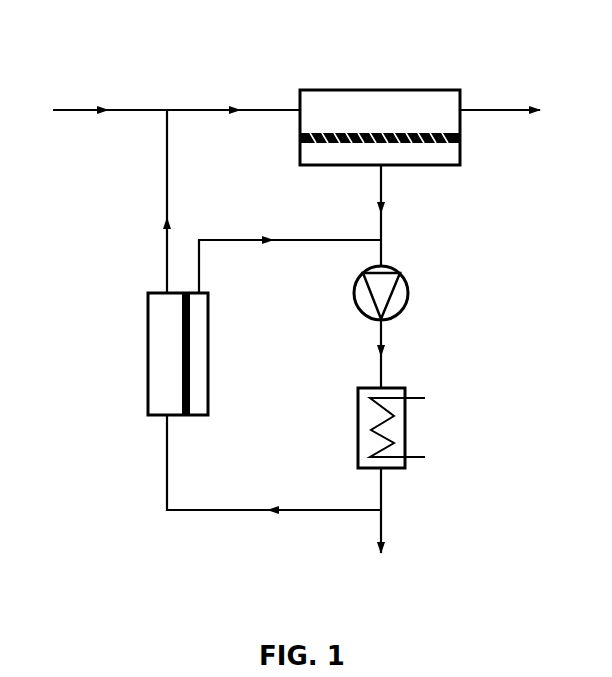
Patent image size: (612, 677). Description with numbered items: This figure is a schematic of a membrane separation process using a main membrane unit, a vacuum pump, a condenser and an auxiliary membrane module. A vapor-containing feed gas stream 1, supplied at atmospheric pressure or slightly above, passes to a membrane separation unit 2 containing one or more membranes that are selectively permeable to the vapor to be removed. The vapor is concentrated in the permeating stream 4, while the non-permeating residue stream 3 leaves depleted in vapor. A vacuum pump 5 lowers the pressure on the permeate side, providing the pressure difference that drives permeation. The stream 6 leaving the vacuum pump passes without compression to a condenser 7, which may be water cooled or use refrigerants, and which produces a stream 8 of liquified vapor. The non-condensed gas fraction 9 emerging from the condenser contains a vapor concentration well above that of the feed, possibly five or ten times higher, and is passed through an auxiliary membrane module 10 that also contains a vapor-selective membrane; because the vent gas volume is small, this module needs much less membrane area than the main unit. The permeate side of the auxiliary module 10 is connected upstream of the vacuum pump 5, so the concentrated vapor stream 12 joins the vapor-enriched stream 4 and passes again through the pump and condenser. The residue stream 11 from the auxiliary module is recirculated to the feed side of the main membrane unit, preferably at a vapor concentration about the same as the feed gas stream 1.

The feed gas stream 1 is at (176, 94).
The membrane separation unit 2 is at (370, 90).
The residue stream 3 is at (512, 112).
The permeate stream 4 is at (396, 215).
The vacuum pump 5 is at (408, 278).
The vacuum pump exhaust stream 6 is at (363, 354).
The condenser 7 is at (398, 388).
The liquified vapor stream 8 is at (382, 530).
The non-condensed gas fraction 9 is at (274, 484).
The auxiliary membrane module 10 is at (148, 385).
The auxiliary residue stream 11 is at (145, 201).
The concentrated vapor stream 12 is at (290, 250).